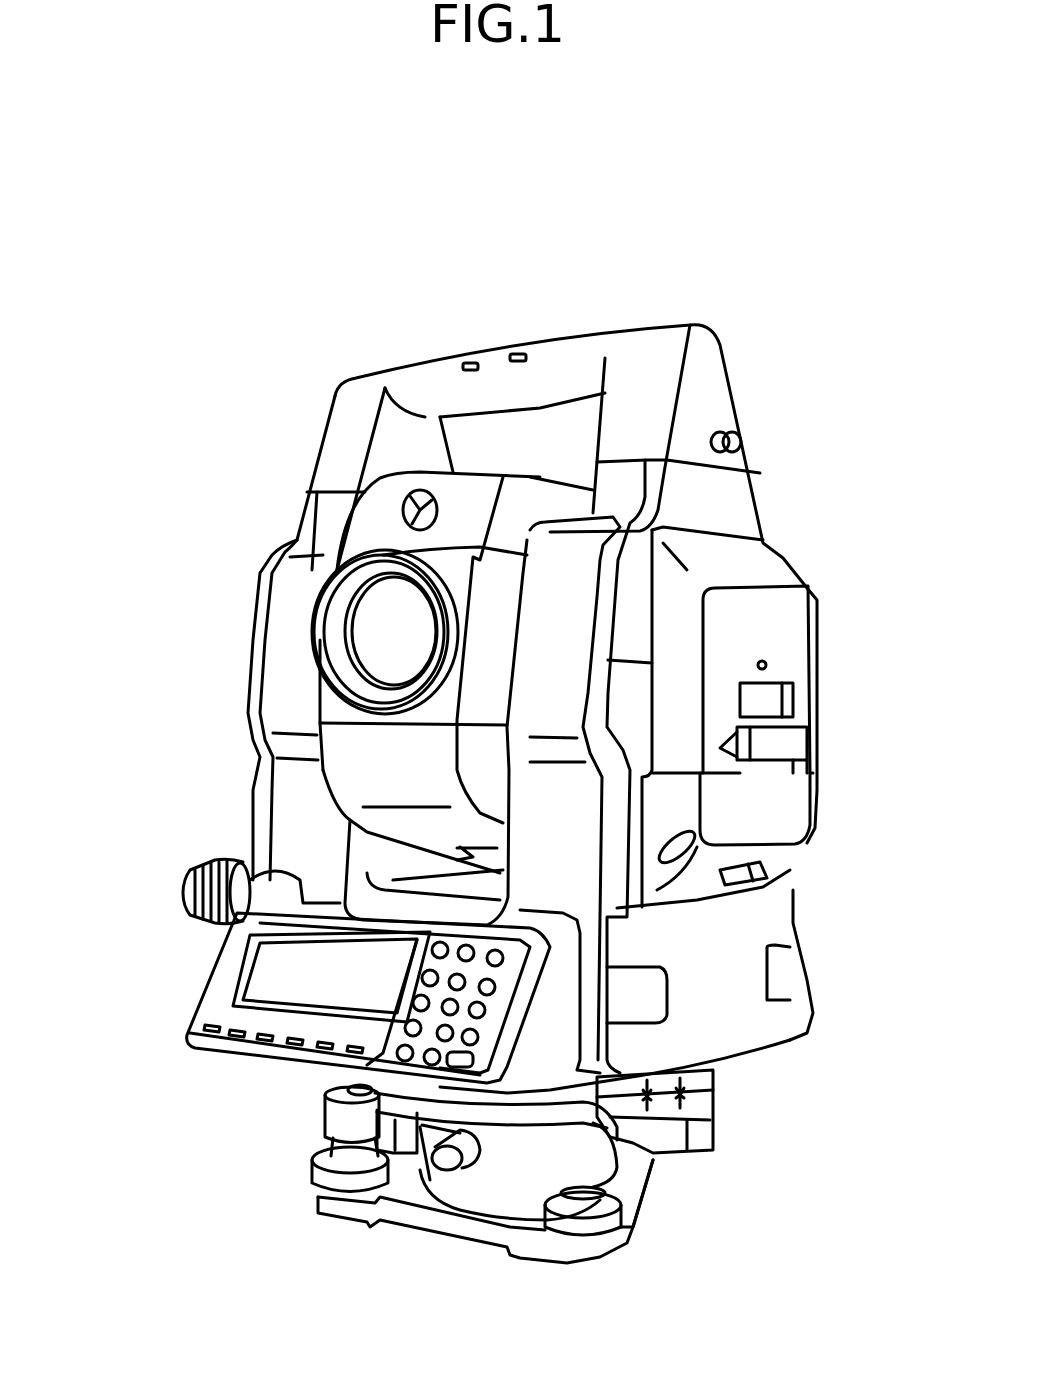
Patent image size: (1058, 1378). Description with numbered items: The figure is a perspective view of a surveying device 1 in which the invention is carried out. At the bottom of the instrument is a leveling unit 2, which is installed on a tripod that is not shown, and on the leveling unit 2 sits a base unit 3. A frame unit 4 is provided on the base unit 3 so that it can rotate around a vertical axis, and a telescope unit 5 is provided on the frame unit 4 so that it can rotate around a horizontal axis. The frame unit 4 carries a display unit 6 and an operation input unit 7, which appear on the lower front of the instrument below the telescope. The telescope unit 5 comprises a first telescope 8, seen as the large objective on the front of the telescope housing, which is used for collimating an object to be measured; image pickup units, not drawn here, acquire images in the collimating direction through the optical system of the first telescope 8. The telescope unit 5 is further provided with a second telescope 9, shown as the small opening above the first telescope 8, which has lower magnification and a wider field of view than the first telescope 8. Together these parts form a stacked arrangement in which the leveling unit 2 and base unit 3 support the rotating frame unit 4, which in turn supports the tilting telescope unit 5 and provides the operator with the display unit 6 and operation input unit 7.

The surveying device 1 is at (118, 350).
The leveling unit 2 is at (318, 1217).
The base unit 3 is at (703, 1145).
The frame unit 4 is at (783, 558).
The telescope unit 5 is at (357, 768).
The display unit 6 is at (295, 970).
The operation input unit 7 is at (273, 1047).
The first telescope 8 is at (378, 622).
The second telescope 9 is at (410, 497).